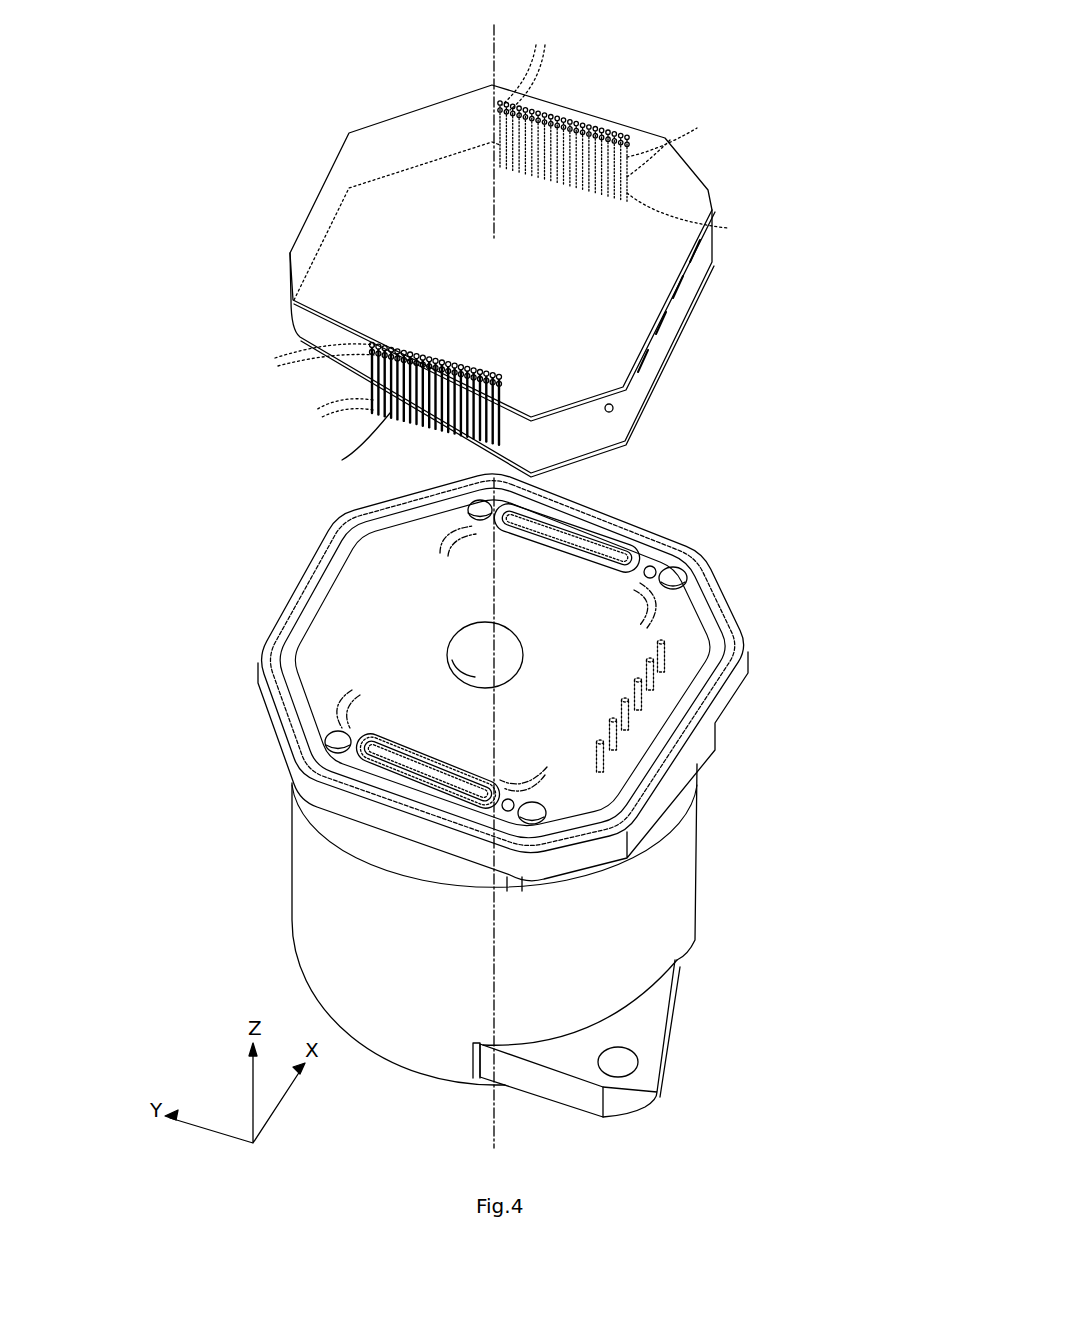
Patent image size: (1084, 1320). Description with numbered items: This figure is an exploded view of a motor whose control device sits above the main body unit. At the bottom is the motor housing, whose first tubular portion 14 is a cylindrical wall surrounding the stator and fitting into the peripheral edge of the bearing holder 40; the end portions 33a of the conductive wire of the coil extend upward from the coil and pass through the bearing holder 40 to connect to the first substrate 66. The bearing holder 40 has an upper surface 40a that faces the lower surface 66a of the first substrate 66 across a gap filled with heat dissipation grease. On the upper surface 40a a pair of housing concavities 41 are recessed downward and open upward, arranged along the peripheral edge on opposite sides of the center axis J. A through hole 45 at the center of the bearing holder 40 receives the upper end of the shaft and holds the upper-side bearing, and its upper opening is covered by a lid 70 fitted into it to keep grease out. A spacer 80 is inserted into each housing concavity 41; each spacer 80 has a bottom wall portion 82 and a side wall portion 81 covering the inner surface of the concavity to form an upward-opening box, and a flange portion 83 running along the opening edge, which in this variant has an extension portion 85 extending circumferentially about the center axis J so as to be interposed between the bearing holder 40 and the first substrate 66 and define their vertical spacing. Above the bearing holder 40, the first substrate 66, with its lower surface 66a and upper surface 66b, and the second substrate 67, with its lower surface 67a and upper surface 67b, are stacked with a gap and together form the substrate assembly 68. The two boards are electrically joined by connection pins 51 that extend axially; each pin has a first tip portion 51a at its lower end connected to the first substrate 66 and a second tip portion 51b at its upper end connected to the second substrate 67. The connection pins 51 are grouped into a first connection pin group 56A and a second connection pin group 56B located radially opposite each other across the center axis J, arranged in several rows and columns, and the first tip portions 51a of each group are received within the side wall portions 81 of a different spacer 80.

The center axis J is at (492, 46).
The first tubular portion 14 is at (300, 897).
The end portion of the conductive wire 33a is at (668, 675).
The bearing holder 40 is at (524, 795).
The upper surface 40a is at (690, 602).
The housing concavity 41 is at (645, 535).
The through hole 45 is at (478, 640).
The connection pin 51 is at (504, 271).
The first tip portion 51a is at (533, 333).
The second tip portion 51b is at (396, 194).
The first connection pin group 56A is at (592, 115).
The second connection pin group 56B is at (406, 335).
The first substrate 66 is at (542, 357).
The lower surface 66a is at (598, 462).
The upper surface 66b is at (610, 430).
The second substrate 67 is at (542, 256).
The lower surface 67a is at (622, 395).
The upper surface 67b is at (640, 322).
The substrate assembly 68 is at (516, 261).
The lid 70 is at (460, 660).
The spacer 80 is at (670, 568).
The side wall portion 81 is at (397, 757).
The bottom wall portion 82 is at (427, 777).
The flange portion 83 is at (355, 770).
The extension portion 85 is at (430, 548).